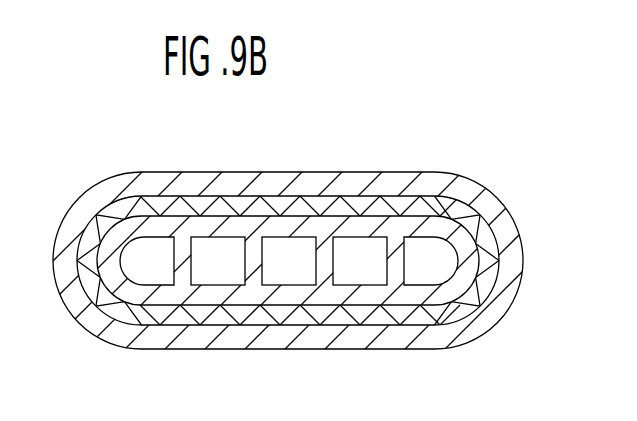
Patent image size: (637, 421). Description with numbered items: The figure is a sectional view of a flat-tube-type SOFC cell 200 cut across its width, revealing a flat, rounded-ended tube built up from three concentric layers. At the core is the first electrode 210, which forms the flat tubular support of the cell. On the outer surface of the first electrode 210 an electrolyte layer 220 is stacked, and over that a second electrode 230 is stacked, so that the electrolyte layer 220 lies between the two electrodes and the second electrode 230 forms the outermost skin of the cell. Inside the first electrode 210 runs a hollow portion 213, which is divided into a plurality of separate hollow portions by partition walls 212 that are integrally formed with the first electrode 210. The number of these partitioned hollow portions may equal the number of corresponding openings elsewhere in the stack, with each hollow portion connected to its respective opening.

The flat-tube-type SOFC cell 200 is at (442, 123).
The first electrode 210 is at (192, 222).
The partition walls 212 is at (172, 270).
The hollow portion 213 is at (291, 270).
The electrolyte layer 220 is at (273, 200).
The second electrode 230 is at (350, 183).